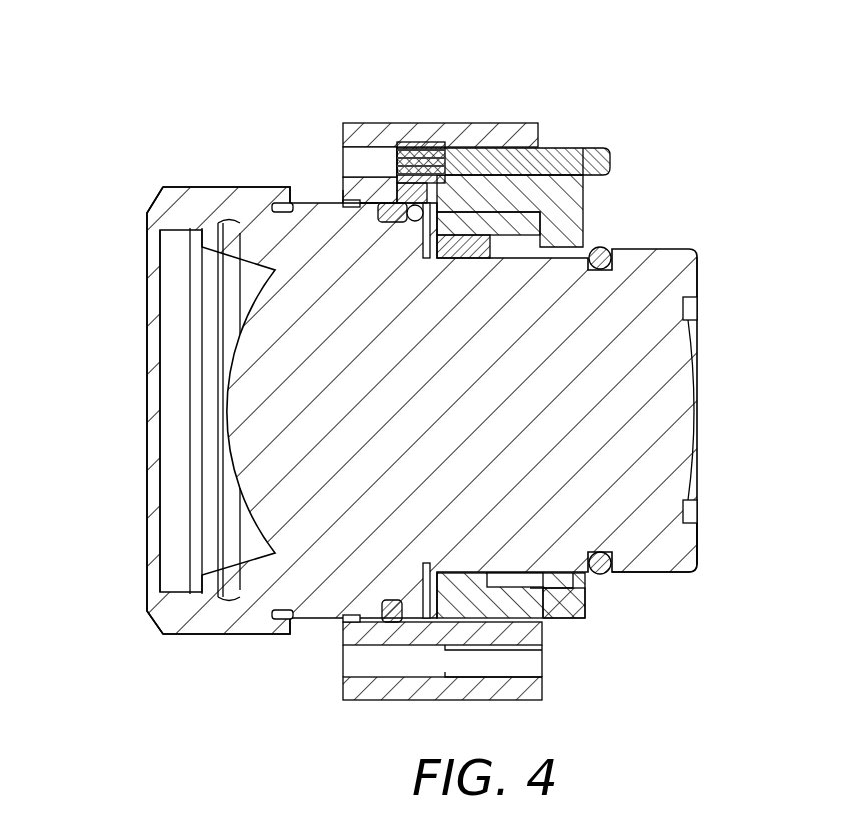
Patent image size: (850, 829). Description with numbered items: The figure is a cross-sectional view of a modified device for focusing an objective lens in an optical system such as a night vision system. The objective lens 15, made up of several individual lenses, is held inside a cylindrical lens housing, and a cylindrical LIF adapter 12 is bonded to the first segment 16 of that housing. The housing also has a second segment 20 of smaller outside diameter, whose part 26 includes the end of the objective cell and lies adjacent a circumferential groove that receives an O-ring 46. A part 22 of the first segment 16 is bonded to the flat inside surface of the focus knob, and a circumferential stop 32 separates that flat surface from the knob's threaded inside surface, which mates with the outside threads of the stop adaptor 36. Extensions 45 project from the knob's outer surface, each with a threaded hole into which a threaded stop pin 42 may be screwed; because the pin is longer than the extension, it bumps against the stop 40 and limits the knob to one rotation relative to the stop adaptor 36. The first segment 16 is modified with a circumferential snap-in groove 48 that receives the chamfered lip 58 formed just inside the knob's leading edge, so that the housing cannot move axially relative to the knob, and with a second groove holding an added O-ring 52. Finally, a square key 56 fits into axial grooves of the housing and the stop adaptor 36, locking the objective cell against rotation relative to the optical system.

The LIF adapter 12 is at (177, 482).
The objective lens 15 is at (520, 418).
The first segment 16 is at (317, 629).
The second segment 20 is at (690, 592).
The part of first segment 22 is at (515, 573).
The part of second segment 26 is at (680, 550).
The circumferential stop 32 is at (421, 172).
The stop adaptor 36 is at (583, 222).
The stop 40 is at (560, 190).
The threaded stop pin 42 is at (604, 158).
The extension 45 is at (487, 124).
The O-ring 46 is at (603, 576).
The circumferential snap-in groove 48 is at (345, 205).
The O-ring 52 is at (392, 198).
The key 56 is at (450, 257).
The chamfered lip 58 is at (360, 205).